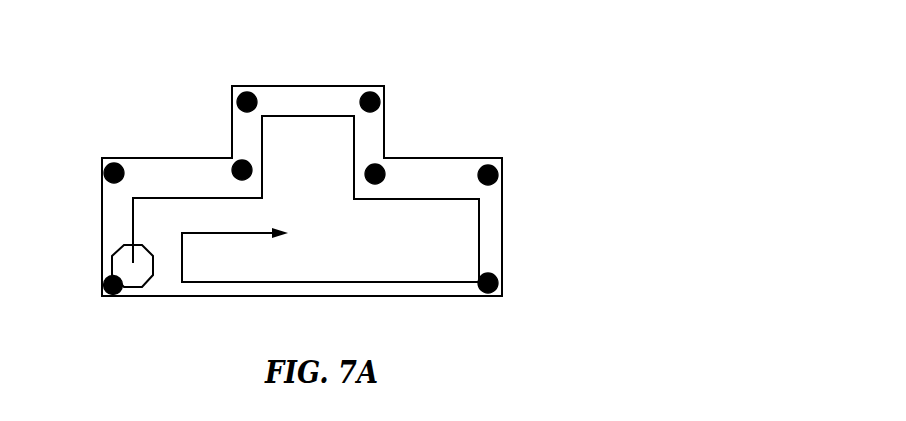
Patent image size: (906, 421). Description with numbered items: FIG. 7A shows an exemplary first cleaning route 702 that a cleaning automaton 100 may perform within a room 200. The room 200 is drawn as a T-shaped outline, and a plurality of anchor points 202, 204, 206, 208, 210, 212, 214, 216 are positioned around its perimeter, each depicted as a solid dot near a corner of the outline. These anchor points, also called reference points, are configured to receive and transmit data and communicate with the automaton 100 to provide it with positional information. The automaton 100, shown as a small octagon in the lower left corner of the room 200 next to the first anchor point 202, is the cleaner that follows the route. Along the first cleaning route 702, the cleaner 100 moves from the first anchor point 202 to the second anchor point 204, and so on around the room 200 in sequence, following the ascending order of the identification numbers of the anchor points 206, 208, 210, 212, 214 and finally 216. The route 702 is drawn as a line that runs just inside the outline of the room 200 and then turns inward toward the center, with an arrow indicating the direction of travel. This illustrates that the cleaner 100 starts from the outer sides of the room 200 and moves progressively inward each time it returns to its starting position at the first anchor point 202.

The room 200 is at (475, 63).
The automaton 100 is at (118, 255).
The first anchor point 202 is at (108, 295).
The second anchor point 204 is at (112, 163).
The anchor point 206 is at (240, 160).
The anchor point 208 is at (248, 92).
The anchor point 210 is at (372, 93).
The anchor point 212 is at (378, 165).
The anchor point 214 is at (493, 166).
The anchor point 216 is at (496, 292).
The first cleaning route 702 is at (483, 227).